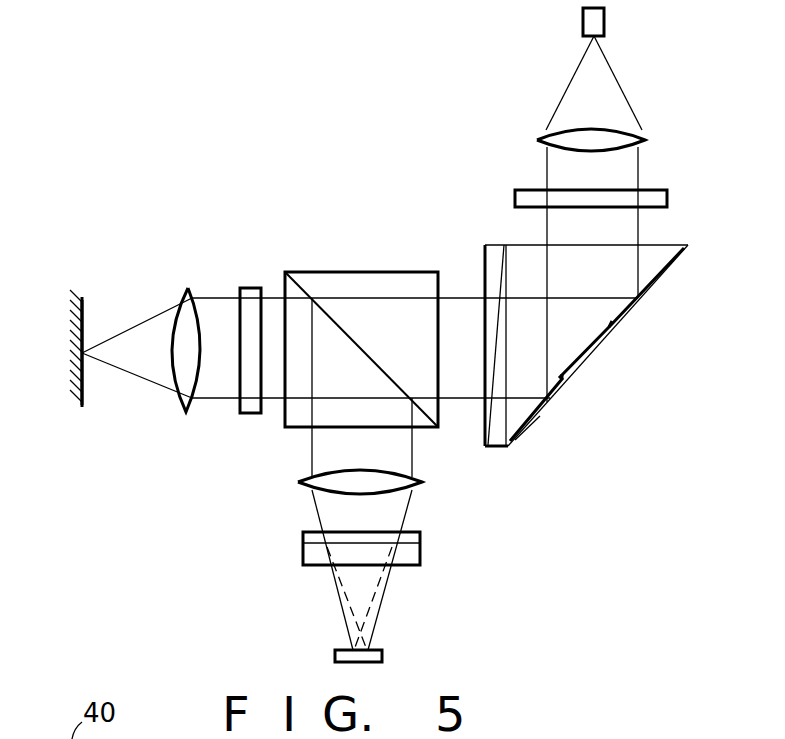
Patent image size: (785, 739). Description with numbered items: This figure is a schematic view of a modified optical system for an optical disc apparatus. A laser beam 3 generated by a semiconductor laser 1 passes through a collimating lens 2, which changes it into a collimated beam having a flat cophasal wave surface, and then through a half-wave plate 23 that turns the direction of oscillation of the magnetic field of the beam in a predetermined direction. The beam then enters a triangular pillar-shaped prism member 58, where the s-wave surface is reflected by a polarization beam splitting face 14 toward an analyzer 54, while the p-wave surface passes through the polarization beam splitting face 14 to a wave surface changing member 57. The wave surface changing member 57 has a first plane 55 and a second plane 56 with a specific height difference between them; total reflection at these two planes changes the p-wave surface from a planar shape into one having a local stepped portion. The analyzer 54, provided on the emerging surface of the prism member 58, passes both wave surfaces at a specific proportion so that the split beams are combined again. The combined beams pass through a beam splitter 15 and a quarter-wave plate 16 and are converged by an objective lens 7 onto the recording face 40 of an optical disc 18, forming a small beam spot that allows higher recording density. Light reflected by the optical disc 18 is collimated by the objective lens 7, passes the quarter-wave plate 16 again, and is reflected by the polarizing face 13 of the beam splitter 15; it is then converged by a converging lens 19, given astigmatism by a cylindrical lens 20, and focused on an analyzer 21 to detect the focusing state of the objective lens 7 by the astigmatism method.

The semiconductor laser 1 is at (605, 22).
The collimating lens 2 is at (620, 140).
The laser beam 3 is at (605, 92).
The λ/2 plate 23 is at (668, 197).
The triangular pillar-shaped prism member 58 is at (522, 256).
The analyzer 54 is at (493, 262).
The polarization beam splitting face 14 is at (670, 258).
The second plane 56 is at (626, 340).
The wave surface changing member 57 is at (590, 360).
The first plane 55 is at (542, 422).
The beam splitter 15 is at (365, 285).
The polarizing face 13 is at (370, 355).
The λ/4 plate 16 is at (249, 287).
The objective lens 7 is at (190, 305).
The optical disc 18 is at (58, 336).
The recording face 40 is at (84, 320).
The converging lens 19 is at (395, 482).
The cylindrical lens 20 is at (410, 555).
The analyzer 21 is at (384, 655).